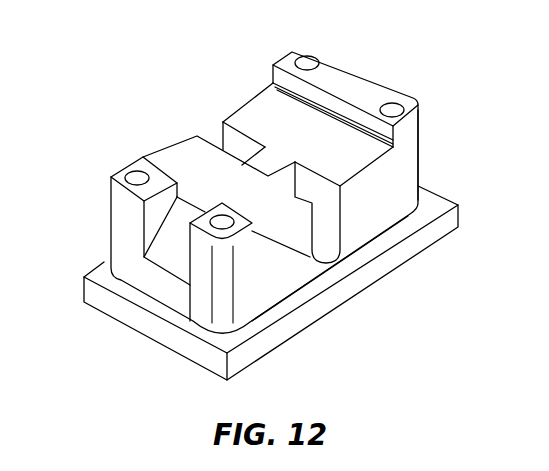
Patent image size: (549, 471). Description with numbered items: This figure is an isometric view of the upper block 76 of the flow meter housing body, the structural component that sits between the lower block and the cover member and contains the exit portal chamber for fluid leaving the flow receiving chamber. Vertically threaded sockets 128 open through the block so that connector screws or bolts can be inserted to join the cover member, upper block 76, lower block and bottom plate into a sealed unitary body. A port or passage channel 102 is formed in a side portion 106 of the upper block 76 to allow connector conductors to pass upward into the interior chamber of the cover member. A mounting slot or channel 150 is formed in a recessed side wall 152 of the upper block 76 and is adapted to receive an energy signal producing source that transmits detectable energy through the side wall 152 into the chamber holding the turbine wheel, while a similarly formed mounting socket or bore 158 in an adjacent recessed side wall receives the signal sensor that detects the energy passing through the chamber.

The upper block 76 is at (213, 74).
The passage channel 102 is at (167, 256).
The side portion 106 is at (205, 285).
The vertically threaded sockets 128 is at (135, 173).
The mounting slot 150 is at (328, 247).
The recessed side wall 152 is at (372, 200).
The mounting socket 158 is at (212, 135).